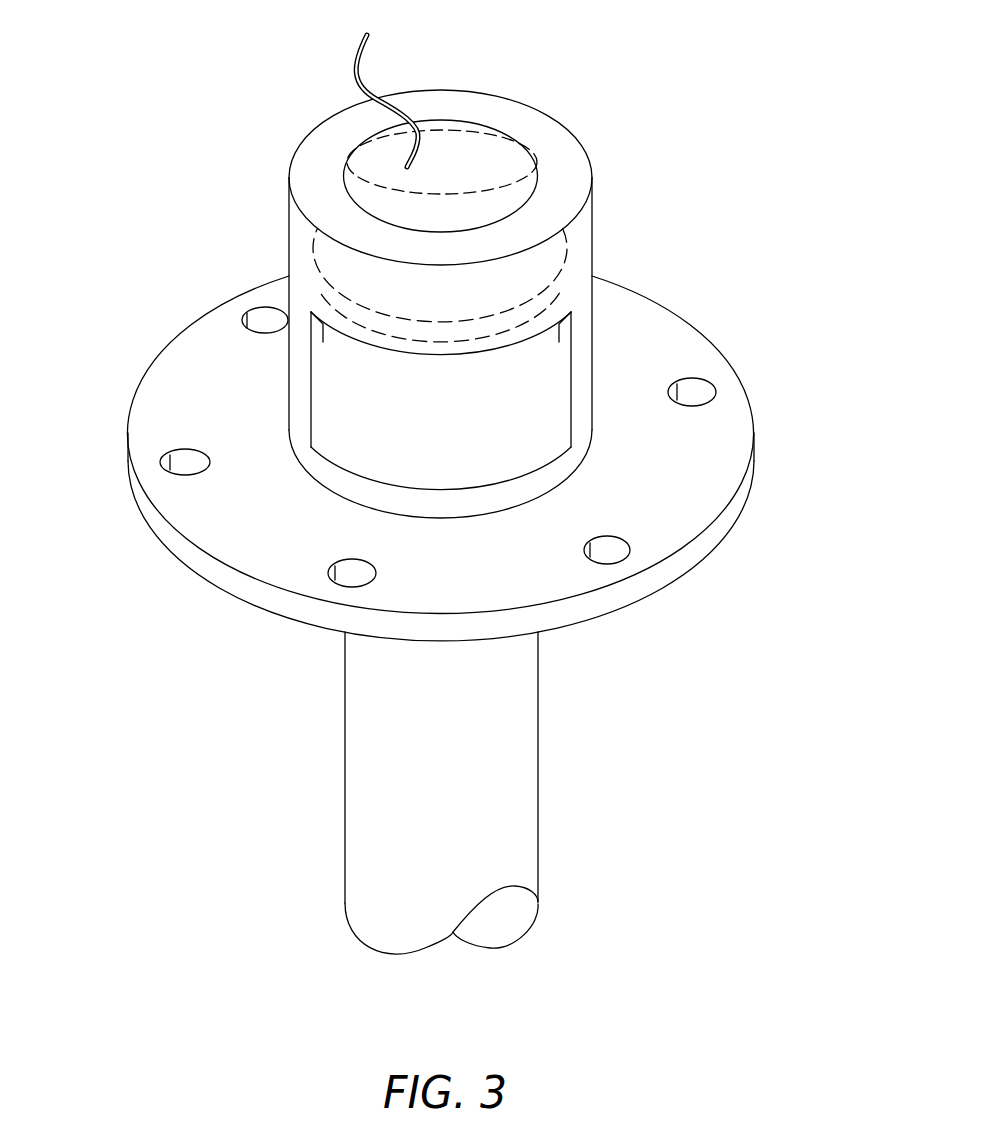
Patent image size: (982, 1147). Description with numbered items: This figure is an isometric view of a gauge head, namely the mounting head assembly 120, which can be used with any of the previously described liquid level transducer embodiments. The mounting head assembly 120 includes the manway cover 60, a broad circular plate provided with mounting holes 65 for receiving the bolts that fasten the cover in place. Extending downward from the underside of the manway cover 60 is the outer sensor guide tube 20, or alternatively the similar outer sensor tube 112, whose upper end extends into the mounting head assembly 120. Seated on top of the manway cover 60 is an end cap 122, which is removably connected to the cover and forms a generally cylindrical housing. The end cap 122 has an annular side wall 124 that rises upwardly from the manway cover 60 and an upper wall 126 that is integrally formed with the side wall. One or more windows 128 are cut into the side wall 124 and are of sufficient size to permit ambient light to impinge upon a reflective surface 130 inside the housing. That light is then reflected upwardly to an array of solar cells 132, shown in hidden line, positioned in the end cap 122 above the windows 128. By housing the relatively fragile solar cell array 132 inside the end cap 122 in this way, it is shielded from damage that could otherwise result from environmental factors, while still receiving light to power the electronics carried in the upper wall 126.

The mounting head assembly 120 is at (133, 182).
The end cap 122 is at (498, 293).
The annular side wall 124 is at (468, 145).
The upper wall 126 is at (577, 170).
The windows 128 is at (356, 457).
The reflective surface 130 is at (437, 458).
The array of solar cells 132 is at (570, 243).
The manway cover 60 is at (688, 352).
The mounting holes 65 is at (257, 323).
The outer sensor guide tube 20 is at (513, 793).
The outer sensor tube 112 is at (528, 823).